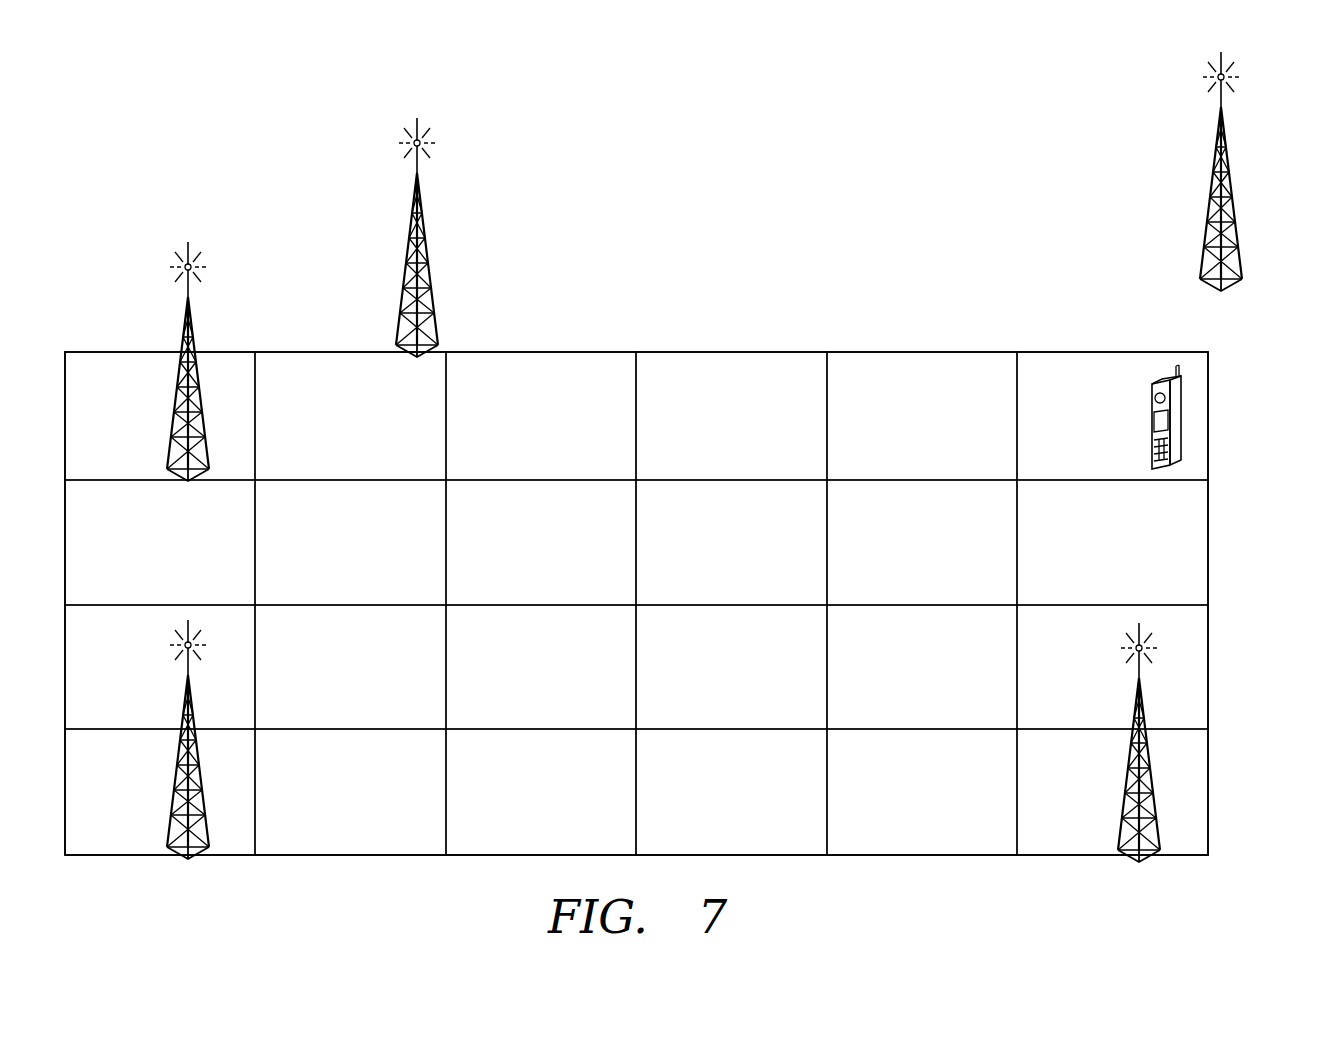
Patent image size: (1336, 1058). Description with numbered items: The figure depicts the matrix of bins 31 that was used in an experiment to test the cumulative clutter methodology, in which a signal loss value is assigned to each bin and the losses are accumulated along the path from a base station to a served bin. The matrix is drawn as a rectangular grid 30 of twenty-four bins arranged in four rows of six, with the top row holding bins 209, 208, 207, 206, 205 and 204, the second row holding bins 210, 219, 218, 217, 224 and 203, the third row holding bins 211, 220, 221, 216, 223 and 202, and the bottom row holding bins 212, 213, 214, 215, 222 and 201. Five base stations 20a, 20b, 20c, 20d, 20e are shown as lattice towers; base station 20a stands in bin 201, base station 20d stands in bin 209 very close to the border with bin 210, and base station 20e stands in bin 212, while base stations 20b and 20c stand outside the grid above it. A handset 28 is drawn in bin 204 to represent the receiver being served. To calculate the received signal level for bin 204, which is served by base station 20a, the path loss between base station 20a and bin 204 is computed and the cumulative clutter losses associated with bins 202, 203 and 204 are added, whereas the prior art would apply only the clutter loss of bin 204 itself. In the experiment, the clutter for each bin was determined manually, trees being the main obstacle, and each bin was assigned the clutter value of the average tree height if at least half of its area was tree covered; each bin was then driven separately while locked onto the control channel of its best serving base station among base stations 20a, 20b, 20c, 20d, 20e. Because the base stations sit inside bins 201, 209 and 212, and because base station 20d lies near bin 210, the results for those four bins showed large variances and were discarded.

The matrix of bins 31 is at (254, 111).
The cell grid / service area map 30 is at (1210, 548).
The mobile station (wireless handset) 28 is at (1150, 398).
The base station 20a is at (1122, 772).
The base station 20b is at (1242, 201).
The base station 20c is at (405, 265).
The base station 20d is at (172, 392).
The base station 20e is at (172, 770).
The bin 201 is at (1085, 834).
The bin 202 is at (1085, 709).
The bin 203 is at (1085, 586).
The bin 204 is at (1085, 458).
The bin 205 is at (895, 458).
The bin 206 is at (704, 458).
The bin 207 is at (514, 458).
The bin 208 is at (323, 458).
The bin 209 is at (133, 458).
The bin 210 is at (133, 586).
The bin 211 is at (133, 709).
The bin 212 is at (133, 834).
The bin 213 is at (323, 834).
The bin 214 is at (514, 834).
The bin 215 is at (704, 834).
The bin 216 is at (704, 709).
The bin 217 is at (704, 586).
The bin 218 is at (514, 586).
The bin 219 is at (323, 586).
The bin 220 is at (323, 709).
The bin 221 is at (514, 709).
The bin 222 is at (895, 834).
The bin 223 is at (895, 709).
The bin 224 is at (895, 586).